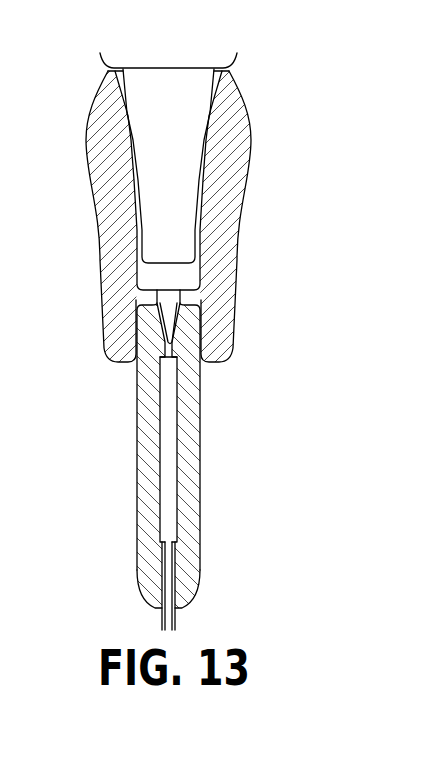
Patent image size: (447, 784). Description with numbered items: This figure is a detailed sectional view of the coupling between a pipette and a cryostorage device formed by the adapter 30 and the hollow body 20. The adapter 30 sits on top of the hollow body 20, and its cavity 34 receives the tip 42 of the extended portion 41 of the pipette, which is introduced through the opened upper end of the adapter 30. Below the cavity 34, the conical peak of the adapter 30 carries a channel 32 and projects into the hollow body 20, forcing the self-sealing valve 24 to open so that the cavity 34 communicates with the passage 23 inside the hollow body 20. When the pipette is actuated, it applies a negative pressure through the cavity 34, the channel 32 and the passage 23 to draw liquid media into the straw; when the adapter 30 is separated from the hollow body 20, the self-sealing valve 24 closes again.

The hollow body 20 is at (197, 447).
The passage 23 is at (162, 470).
The self-sealing valve 24 is at (232, 327).
The adapter 30 is at (110, 232).
The channel 32 is at (168, 309).
The cavity 34 is at (199, 208).
The extended portion 41 is at (213, 60).
The tip 42 is at (180, 162).